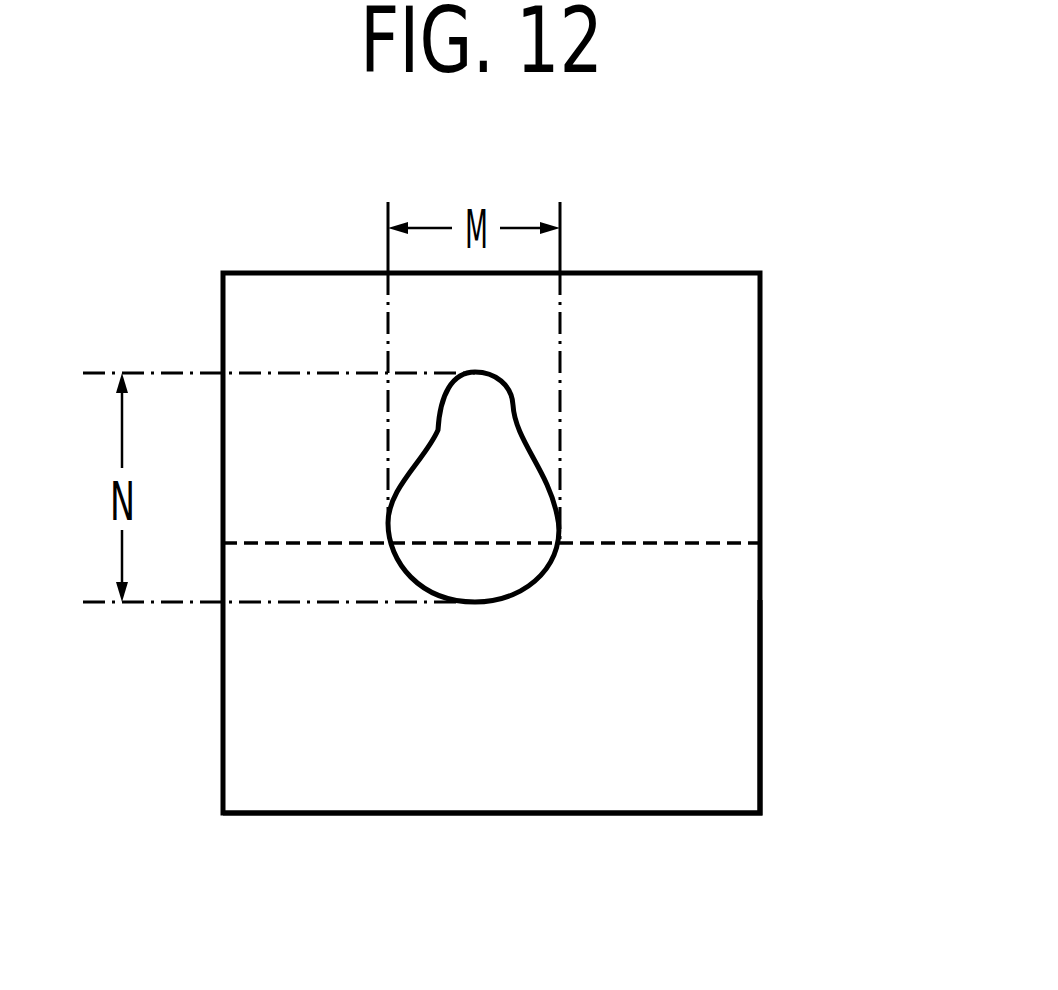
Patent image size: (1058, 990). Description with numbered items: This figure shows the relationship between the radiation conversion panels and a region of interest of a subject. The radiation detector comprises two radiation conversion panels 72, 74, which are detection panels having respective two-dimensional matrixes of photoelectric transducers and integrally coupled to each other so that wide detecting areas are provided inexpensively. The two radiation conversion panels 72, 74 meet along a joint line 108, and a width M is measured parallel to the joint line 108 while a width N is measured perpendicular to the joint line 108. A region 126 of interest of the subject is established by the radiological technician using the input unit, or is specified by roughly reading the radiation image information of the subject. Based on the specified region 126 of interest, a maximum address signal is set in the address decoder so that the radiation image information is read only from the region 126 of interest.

The radiation conversion panel 72 is at (768, 332).
The radiation conversion panel 74 is at (768, 757).
The joint line 108 is at (706, 542).
The region of interest 126 is at (453, 432).